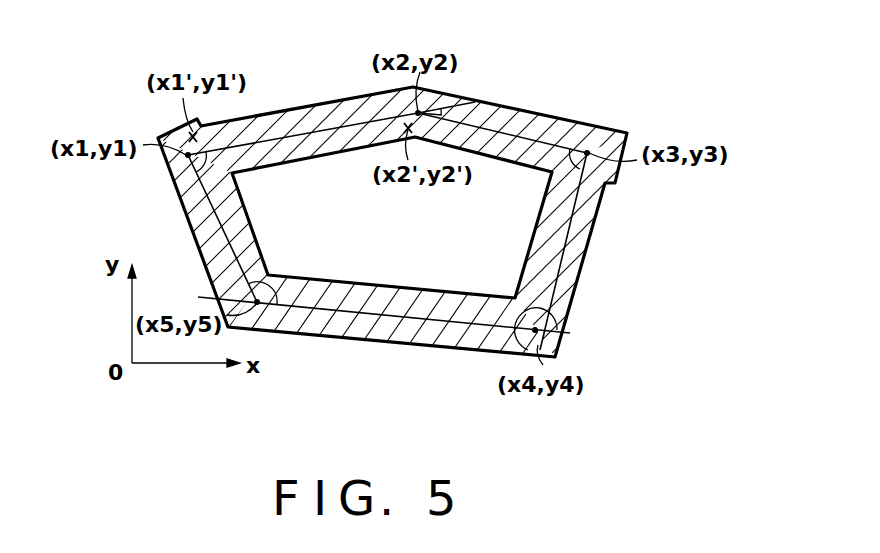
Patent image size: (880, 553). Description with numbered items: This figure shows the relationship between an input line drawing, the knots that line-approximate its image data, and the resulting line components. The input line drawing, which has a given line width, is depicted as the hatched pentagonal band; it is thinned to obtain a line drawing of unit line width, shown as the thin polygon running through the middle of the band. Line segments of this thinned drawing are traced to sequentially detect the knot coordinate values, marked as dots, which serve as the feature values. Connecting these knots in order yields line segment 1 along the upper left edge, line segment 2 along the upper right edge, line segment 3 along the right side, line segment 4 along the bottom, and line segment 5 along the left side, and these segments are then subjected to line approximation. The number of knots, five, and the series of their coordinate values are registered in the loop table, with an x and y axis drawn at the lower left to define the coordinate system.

The line segment l1 1 is at (310, 128).
The line segment l2 2 is at (537, 140).
The line segment l3 3 is at (563, 237).
The line segment l4 4 is at (420, 320).
The line segment l5 5 is at (220, 218).